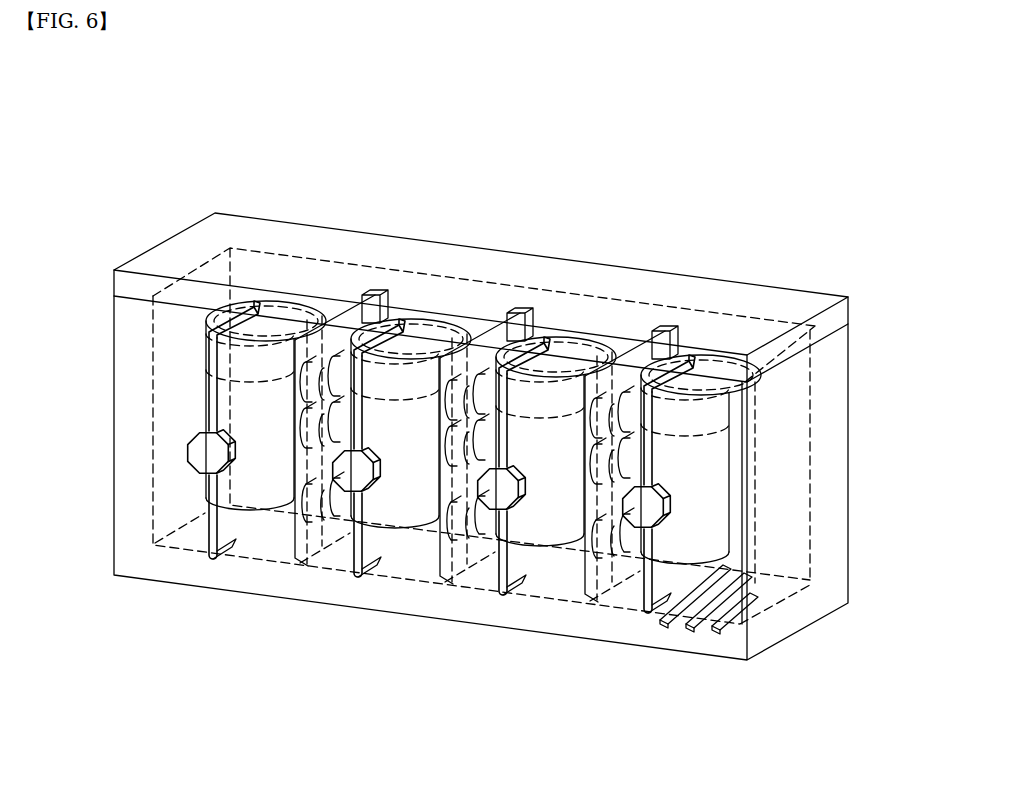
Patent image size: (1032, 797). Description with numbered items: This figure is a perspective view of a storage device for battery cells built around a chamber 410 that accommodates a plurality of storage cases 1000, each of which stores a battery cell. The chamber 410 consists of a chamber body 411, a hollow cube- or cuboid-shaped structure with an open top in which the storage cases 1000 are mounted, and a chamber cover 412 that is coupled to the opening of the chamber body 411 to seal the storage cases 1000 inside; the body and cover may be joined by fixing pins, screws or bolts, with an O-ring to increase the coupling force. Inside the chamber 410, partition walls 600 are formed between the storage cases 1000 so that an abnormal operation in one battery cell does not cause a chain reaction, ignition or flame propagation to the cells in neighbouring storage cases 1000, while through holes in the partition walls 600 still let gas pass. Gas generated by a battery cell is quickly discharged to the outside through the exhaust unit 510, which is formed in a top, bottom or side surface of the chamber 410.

The chamber 410 is at (516, 389).
The chamber body 411 is at (836, 383).
The chamber cover 412 is at (790, 298).
The storage case 1000 is at (274, 540).
The partition wall 600 is at (460, 572).
The exhaust unit 510 is at (708, 618).